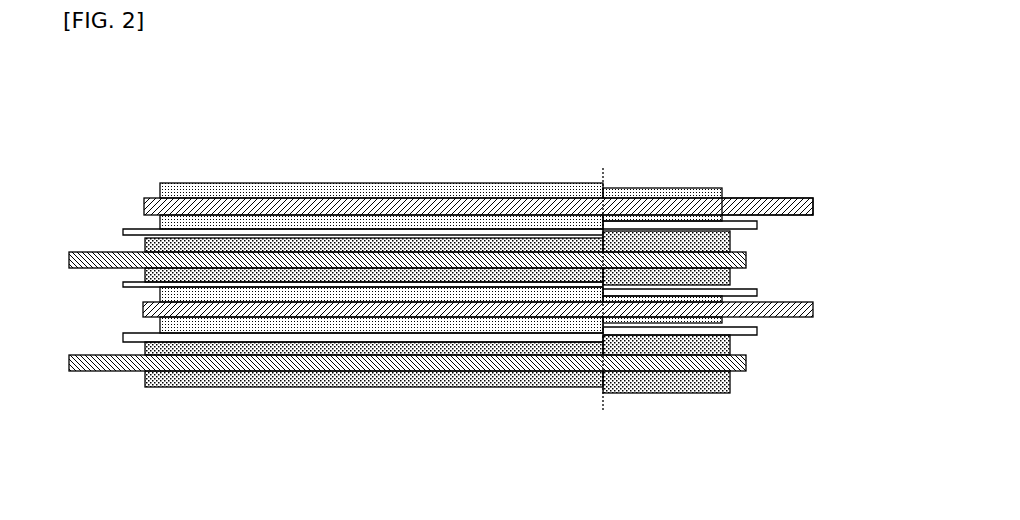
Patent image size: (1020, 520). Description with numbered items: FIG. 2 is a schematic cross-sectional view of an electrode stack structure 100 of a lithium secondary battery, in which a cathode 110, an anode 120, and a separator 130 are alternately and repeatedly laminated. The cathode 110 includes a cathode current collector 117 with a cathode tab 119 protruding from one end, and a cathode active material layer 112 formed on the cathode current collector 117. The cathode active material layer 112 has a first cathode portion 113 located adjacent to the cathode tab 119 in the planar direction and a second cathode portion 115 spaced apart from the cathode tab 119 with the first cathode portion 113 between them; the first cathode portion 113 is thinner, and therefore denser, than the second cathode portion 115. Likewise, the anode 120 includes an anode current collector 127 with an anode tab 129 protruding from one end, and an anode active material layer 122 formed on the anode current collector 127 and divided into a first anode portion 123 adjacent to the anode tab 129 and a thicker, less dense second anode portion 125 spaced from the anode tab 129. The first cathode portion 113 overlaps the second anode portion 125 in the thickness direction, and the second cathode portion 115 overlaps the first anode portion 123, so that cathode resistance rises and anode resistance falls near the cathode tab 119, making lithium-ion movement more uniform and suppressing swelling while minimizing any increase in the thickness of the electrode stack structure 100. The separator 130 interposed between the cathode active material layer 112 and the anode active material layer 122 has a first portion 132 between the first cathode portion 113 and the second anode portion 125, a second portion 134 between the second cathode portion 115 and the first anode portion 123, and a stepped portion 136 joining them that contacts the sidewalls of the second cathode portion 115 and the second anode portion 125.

The electrode stack structure 100 is at (69, 112).
The cathode 110 is at (137, 227).
The cathode active material layer 112 is at (515, 107).
The first cathode portion 113 is at (628, 188).
The second cathode portion 115 is at (530, 187).
The cathode current collector 117 is at (693, 197).
The cathode tab 119 is at (782, 197).
The anode 120 is at (749, 338).
The anode active material layer 122 is at (542, 469).
The first anode portion 123 is at (558, 387).
The second anode portion 125 is at (650, 393).
The anode current collector 127 is at (196, 371).
The anode tab 129 is at (116, 371).
The separator 130 is at (525, 344).
The first portion 132 is at (752, 331).
The second portion 134 is at (413, 338).
The stepped portion 136 is at (612, 287).